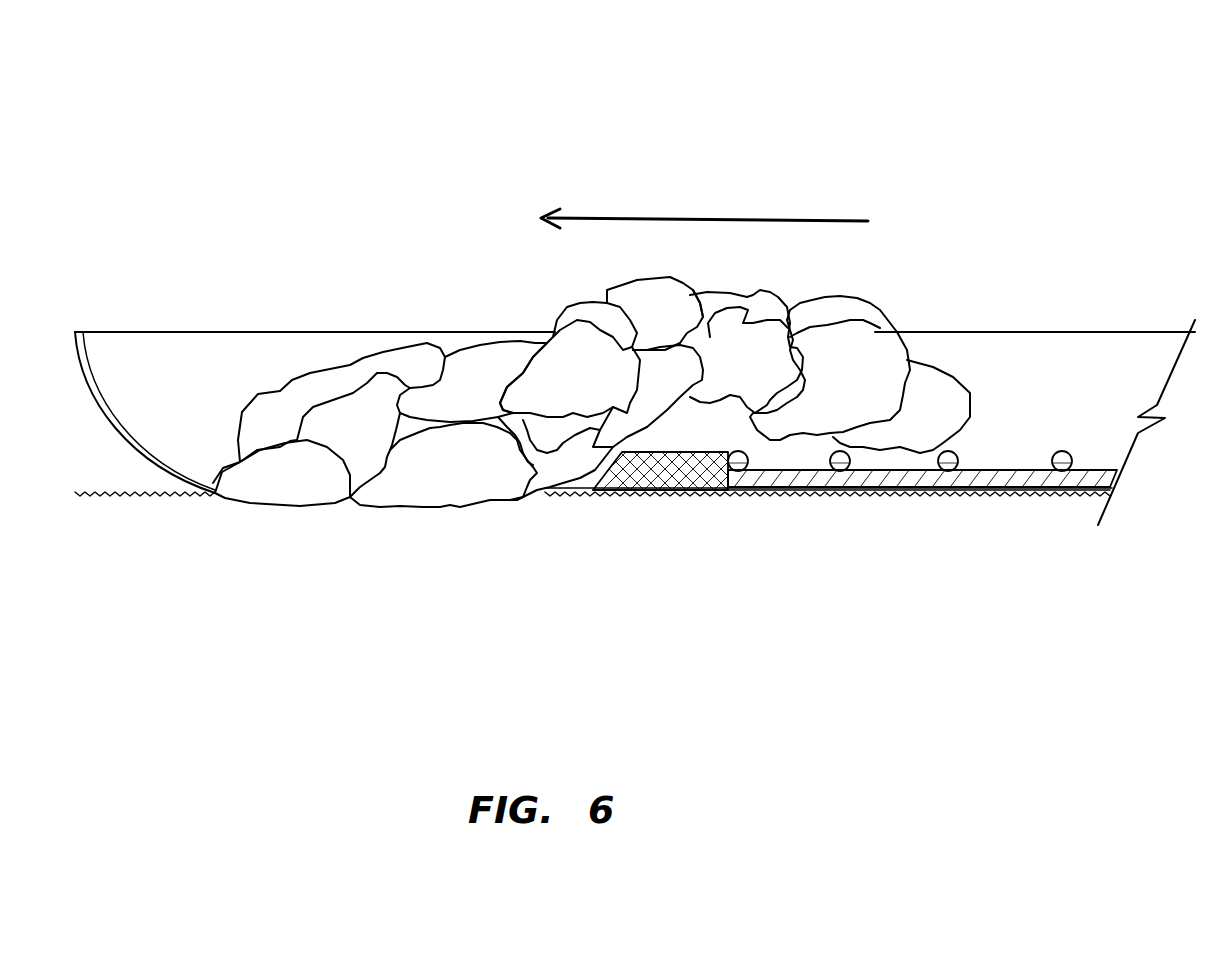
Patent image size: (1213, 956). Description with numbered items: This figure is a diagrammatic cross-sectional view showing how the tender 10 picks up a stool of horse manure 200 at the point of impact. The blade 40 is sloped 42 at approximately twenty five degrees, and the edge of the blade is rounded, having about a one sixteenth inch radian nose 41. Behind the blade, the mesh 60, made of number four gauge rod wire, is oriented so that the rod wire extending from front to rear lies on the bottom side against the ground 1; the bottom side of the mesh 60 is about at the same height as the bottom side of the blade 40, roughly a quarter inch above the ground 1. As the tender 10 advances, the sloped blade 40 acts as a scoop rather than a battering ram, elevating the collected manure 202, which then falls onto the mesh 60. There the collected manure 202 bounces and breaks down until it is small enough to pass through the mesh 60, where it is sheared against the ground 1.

The tender 10 is at (226, 197).
The ground 1 is at (116, 502).
The blade 40 is at (704, 482).
The nose 41 is at (556, 490).
The slope 42 is at (590, 482).
The mesh 60 is at (879, 479).
The horse manure 200 is at (305, 480).
The collected manure 202 is at (832, 361).